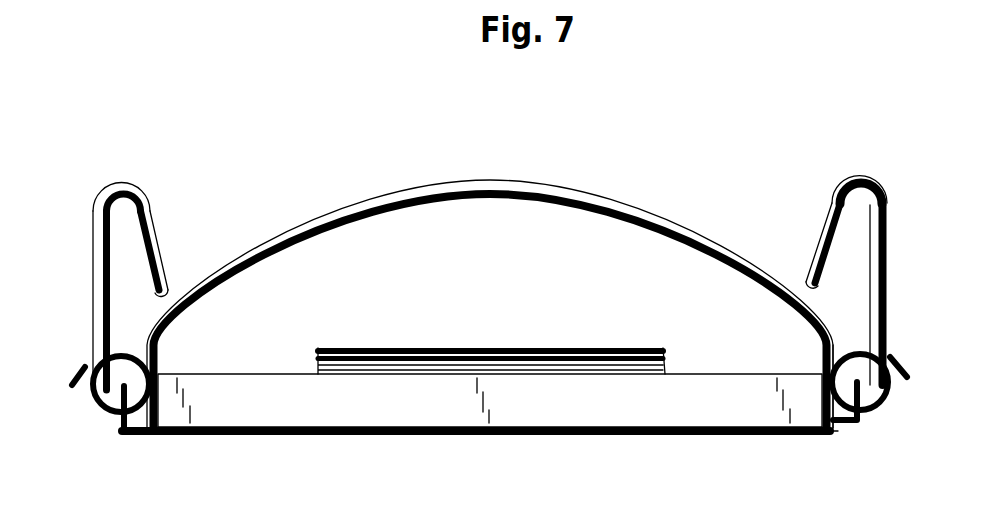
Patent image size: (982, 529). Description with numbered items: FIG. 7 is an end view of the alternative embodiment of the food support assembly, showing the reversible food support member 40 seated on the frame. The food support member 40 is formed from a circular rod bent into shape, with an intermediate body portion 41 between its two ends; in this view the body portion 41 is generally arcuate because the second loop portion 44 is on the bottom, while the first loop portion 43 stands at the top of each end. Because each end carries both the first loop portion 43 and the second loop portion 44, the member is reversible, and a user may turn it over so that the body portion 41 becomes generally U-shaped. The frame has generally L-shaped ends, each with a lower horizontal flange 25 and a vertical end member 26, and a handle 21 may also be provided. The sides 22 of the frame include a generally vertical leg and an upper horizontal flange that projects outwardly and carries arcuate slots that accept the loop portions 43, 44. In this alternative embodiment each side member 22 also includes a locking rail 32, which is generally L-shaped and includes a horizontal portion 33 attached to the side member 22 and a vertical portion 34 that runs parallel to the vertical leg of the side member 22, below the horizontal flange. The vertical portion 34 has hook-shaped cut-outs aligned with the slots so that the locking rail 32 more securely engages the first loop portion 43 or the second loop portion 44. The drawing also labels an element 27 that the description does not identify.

The handle 21 is at (80, 372).
The side member 22 is at (886, 414).
The lower horizontal flange 25 is at (697, 436).
The vertical end member 26 is at (240, 412).
The circuit board stack 27 is at (530, 353).
The locking rail 32 is at (843, 450).
The horizontal portion 33 is at (139, 434).
The vertical portion 34 is at (98, 402).
The food support member 40 is at (886, 174).
The body portion 41 is at (532, 177).
The first loop portion 43 is at (122, 181).
The second loop portion 44 is at (104, 412).